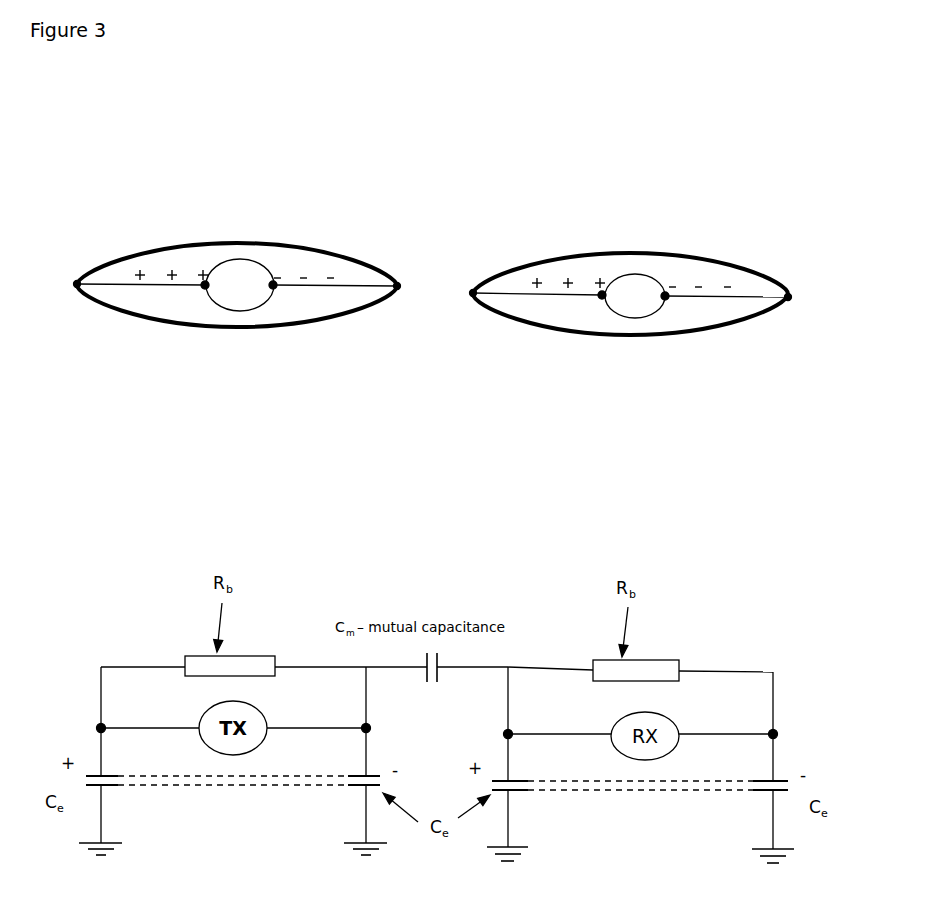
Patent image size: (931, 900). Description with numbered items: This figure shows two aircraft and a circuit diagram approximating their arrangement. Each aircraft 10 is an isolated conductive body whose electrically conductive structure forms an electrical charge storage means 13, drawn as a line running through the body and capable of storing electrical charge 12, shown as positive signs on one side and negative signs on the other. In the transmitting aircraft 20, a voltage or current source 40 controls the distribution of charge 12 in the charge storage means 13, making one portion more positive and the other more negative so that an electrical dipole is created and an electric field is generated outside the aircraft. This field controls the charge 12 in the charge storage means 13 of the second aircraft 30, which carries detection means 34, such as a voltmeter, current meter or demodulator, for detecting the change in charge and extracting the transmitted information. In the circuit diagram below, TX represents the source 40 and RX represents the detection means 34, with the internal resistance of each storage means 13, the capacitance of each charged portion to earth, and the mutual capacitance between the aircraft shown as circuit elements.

The aircraft 10 is at (384, 256).
The electrical charge 12 is at (323, 266).
The electrical charge storage means 13 is at (293, 307).
The aircraft 20 is at (433, 280).
The second aircraft 30 is at (655, 246).
The detection means 34 is at (635, 296).
The voltage or current source 40 is at (240, 285).